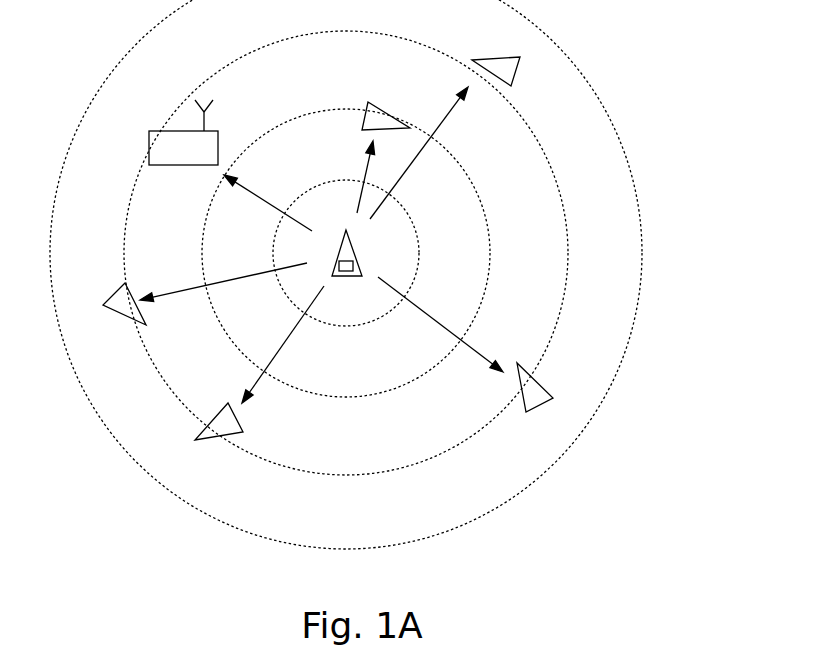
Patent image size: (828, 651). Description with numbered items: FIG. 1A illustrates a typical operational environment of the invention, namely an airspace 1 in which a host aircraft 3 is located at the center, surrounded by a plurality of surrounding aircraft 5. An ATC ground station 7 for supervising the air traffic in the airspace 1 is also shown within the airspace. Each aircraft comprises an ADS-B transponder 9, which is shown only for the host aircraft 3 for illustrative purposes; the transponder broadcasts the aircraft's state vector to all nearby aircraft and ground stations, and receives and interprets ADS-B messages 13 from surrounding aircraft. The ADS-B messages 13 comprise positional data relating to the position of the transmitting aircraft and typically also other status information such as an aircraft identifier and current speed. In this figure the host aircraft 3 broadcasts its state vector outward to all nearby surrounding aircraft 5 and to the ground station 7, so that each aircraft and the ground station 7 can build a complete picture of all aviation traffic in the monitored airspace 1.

The airspace 1 is at (632, 91).
The host aircraft 3 is at (357, 238).
The surrounding aircraft 5 is at (481, 58).
The ATC ground station 7 is at (173, 131).
The ADS-B transponder 9 is at (346, 271).
The ADS-B messages 13 is at (293, 335).